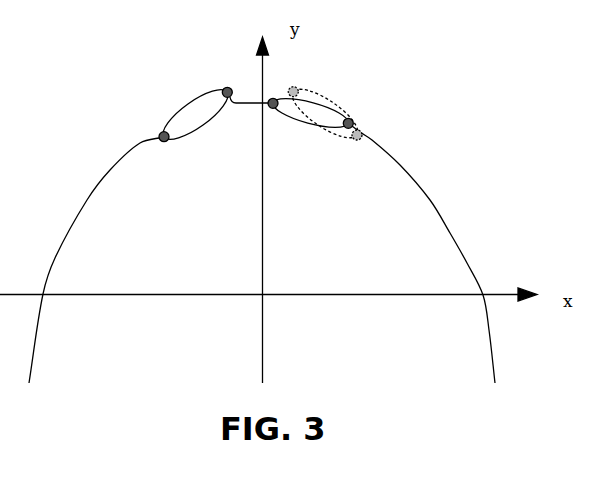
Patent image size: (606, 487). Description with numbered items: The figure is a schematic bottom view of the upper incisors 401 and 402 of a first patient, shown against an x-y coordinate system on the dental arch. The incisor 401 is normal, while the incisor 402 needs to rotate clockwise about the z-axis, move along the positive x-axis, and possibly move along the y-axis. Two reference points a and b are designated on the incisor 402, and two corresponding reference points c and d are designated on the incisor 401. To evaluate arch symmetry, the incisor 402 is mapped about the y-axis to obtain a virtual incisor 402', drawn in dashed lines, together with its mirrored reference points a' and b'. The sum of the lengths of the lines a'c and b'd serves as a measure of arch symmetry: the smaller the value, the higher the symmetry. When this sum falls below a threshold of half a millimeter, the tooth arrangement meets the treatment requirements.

The upper incisor 401 is at (296, 114).
The upper incisor 402 is at (181, 99).
The virtual incisor 402' is at (334, 100).